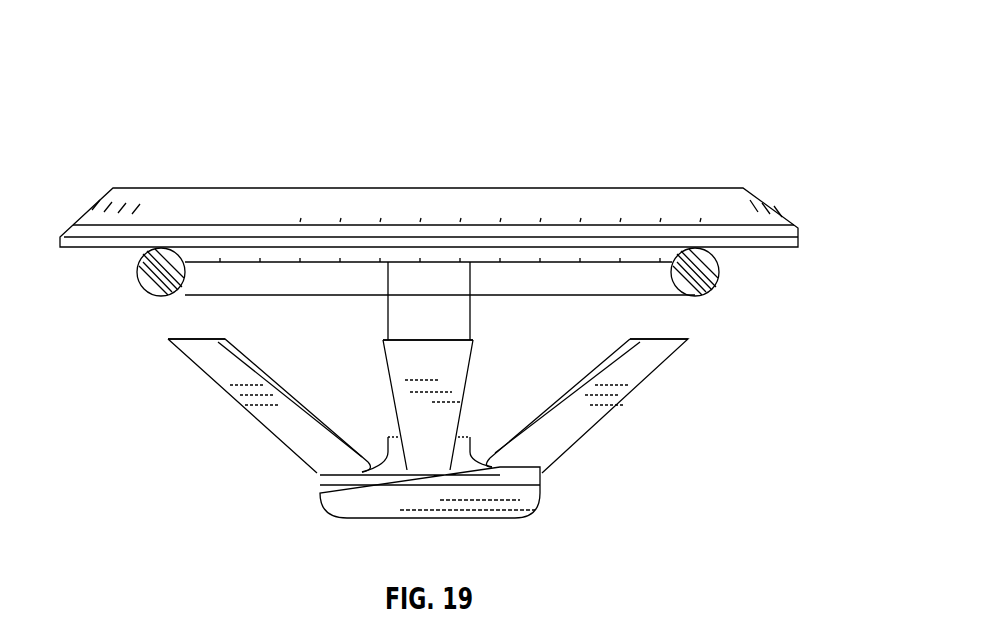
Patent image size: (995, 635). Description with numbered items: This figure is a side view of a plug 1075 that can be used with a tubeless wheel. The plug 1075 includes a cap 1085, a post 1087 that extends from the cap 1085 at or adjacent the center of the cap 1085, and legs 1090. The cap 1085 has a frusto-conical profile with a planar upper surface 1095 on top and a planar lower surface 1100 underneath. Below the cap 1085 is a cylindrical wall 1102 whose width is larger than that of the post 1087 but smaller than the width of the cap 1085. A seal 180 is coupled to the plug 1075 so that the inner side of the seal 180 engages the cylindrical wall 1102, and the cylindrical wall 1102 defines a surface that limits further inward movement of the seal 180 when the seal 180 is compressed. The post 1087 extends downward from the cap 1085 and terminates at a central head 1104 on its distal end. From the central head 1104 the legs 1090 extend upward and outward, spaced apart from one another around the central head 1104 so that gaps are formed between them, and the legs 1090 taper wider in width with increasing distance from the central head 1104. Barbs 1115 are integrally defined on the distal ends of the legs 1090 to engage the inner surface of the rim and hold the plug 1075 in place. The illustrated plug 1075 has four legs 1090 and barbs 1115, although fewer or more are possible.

The plug 1075 is at (652, 96).
The cap 1085 is at (752, 198).
The planar upper surface 1095 is at (565, 188).
The planar lower surface 1100 is at (760, 250).
The cylindrical wall 1102 is at (660, 258).
The seal 180 is at (700, 290).
The post 1087 is at (455, 310).
The legs 1090 is at (280, 430).
The central head 1104 is at (515, 506).
The barbs 1115 is at (185, 336).